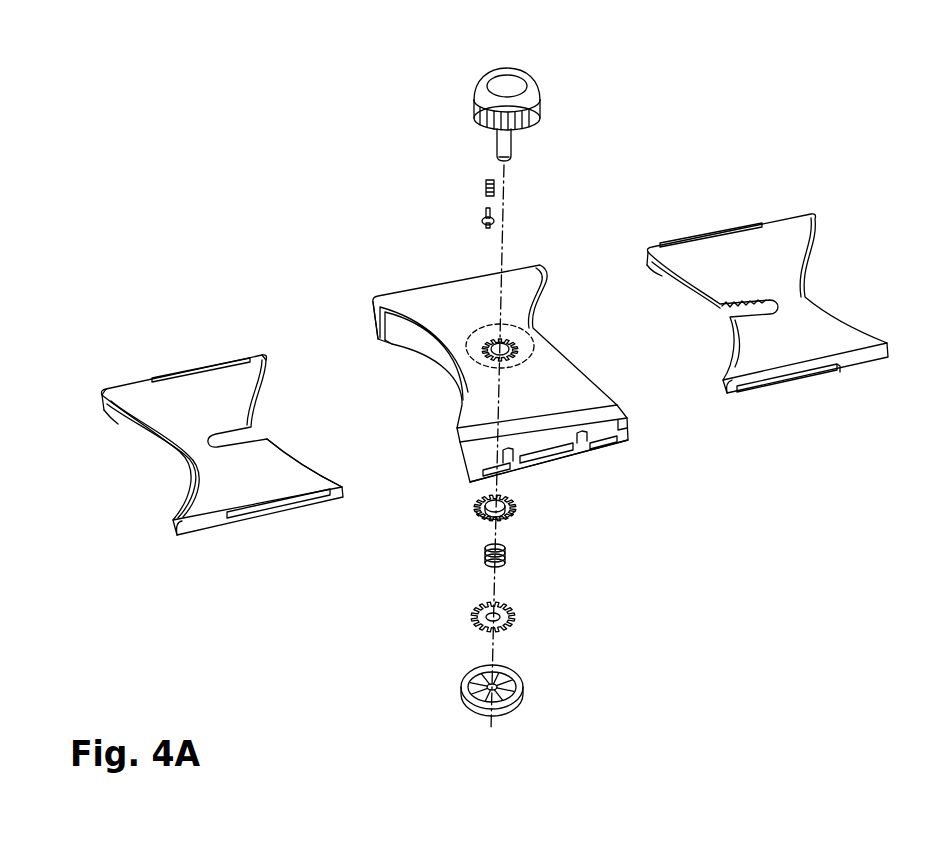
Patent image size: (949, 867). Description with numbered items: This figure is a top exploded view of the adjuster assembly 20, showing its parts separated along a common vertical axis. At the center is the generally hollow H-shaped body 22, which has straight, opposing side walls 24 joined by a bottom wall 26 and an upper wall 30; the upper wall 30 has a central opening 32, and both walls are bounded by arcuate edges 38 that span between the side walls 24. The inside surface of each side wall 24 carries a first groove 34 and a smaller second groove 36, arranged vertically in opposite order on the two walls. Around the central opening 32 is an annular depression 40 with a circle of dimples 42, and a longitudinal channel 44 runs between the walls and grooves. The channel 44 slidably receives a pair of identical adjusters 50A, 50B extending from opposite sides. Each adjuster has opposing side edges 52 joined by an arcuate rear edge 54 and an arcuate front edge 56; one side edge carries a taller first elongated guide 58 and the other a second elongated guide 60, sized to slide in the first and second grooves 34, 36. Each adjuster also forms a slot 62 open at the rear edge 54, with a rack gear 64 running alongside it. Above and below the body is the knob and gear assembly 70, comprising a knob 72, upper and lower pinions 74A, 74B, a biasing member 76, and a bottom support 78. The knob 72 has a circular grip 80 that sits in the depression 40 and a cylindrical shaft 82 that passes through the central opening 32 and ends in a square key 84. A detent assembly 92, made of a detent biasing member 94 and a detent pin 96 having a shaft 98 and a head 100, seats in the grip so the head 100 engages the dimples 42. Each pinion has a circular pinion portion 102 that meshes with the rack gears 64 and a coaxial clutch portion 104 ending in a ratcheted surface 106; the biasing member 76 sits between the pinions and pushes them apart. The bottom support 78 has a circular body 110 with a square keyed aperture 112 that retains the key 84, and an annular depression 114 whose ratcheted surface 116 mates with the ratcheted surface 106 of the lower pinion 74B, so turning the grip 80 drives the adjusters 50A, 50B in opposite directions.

The adjuster assembly 20 is at (700, 110).
The body 22 is at (400, 285).
The side walls 24 is at (600, 426).
The bottom wall 26 is at (445, 360).
The upper wall 30 is at (479, 397).
The central opening 32 is at (502, 351).
The first groove 34 is at (386, 332).
The second groove 36 is at (384, 307).
The arcuate edges 38 is at (538, 312).
The annular depression 40 is at (477, 343).
The dimples 42 is at (506, 340).
The longitudinal channel 44 is at (452, 372).
The adjuster 50A is at (219, 348).
The adjuster 50B is at (771, 208).
The side edges 52 is at (140, 380).
The rear edge 54 is at (285, 462).
The front edge 56 is at (165, 440).
The first elongated guide 58 is at (296, 508).
The second elongated guide 60 is at (190, 370).
The slot 62 is at (258, 427).
The rack gear 64 is at (721, 309).
The knob and gear assembly 70 is at (568, 668).
The knob 72 is at (534, 95).
The upper pinion 74A is at (507, 558).
The lower pinion 74B is at (514, 626).
The biasing member 76 is at (486, 560).
The bottom support 78 is at (493, 722).
The grip 80 is at (509, 82).
The shaft 82 is at (513, 142).
The key 84 is at (512, 159).
The detent assembly 92 is at (448, 177).
The detent biasing member 94 is at (486, 182).
The detent pin 96 is at (495, 221).
The shaft 98 is at (491, 214).
The head 100 is at (485, 228).
The pinion portion 102 is at (480, 522).
The clutch portion 104 is at (512, 514).
The ratcheted surface 106 is at (507, 505).
The body 110 is at (462, 687).
The keyed aperture 112 is at (482, 694).
The annular depression 114 is at (508, 688).
The ratcheted surface 116 is at (500, 692).